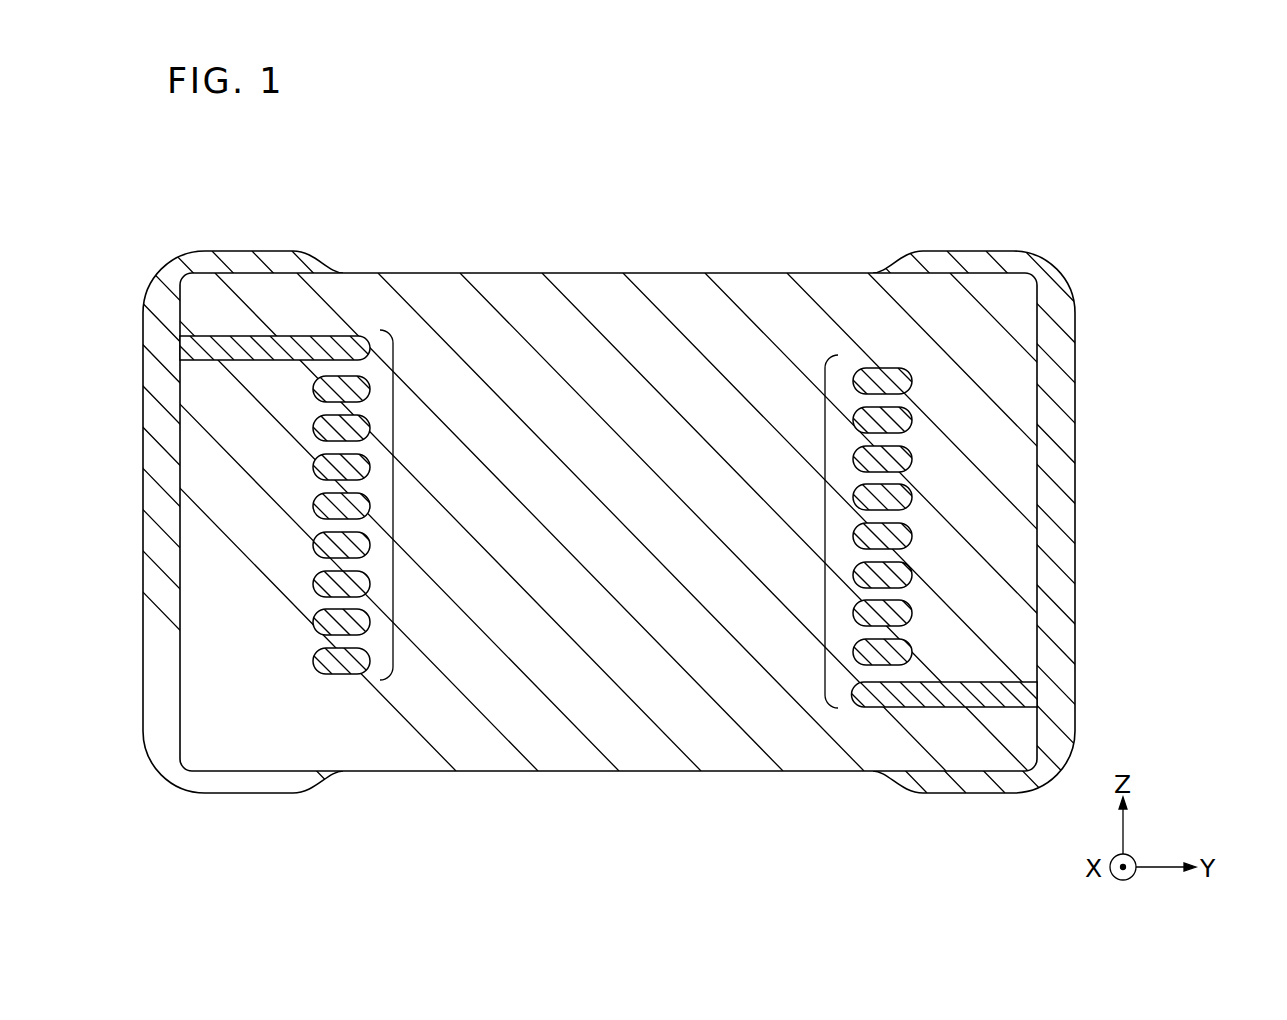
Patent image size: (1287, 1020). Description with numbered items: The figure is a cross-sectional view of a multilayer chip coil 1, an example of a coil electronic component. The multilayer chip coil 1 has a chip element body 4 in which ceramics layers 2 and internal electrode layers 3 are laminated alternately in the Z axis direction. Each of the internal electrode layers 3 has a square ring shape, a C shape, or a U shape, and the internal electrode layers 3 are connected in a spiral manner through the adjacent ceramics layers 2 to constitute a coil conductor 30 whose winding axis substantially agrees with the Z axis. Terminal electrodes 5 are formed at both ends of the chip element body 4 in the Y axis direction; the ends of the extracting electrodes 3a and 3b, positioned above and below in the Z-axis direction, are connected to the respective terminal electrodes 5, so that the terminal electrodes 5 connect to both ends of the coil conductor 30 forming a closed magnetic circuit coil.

The multilayer chip coil 1 is at (1004, 226).
The ceramics layers 2 is at (883, 515).
The internal electrode layers 3 is at (897, 613).
The extracting electrode 3a is at (953, 710).
The extracting electrode 3b is at (284, 336).
The chip element body 4 is at (690, 273).
The terminal electrodes 5 is at (165, 507).
The coil conductor 30 is at (397, 520).